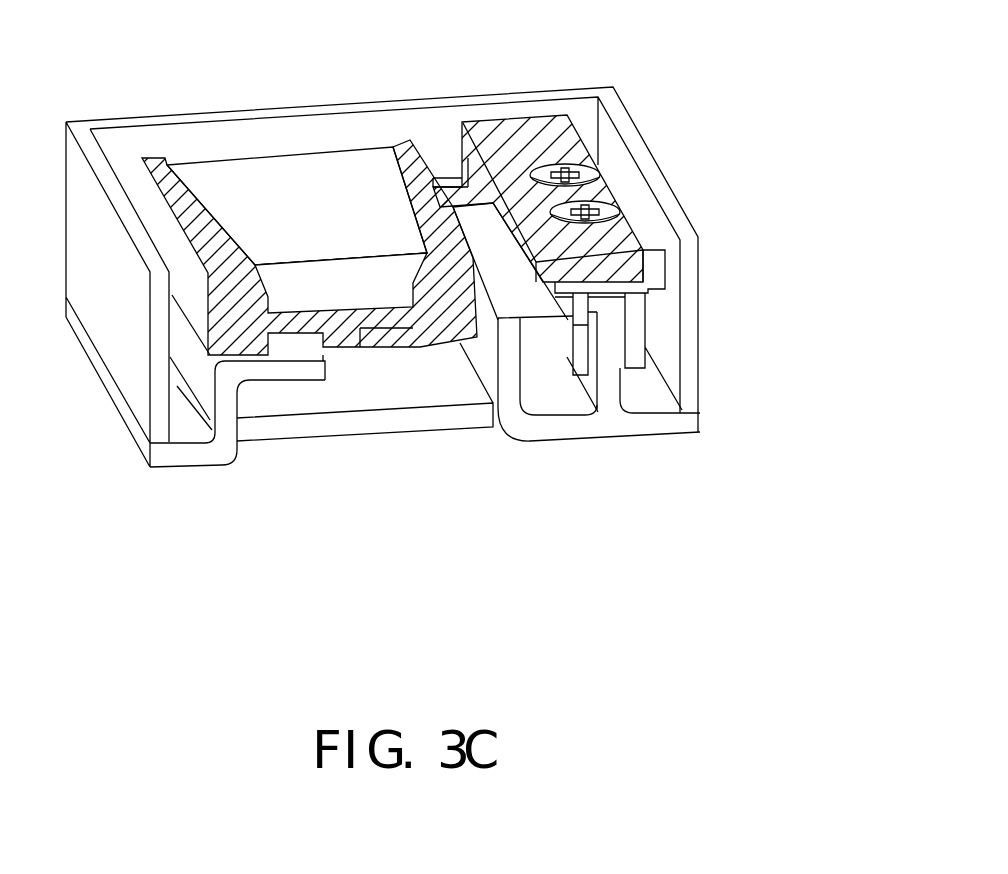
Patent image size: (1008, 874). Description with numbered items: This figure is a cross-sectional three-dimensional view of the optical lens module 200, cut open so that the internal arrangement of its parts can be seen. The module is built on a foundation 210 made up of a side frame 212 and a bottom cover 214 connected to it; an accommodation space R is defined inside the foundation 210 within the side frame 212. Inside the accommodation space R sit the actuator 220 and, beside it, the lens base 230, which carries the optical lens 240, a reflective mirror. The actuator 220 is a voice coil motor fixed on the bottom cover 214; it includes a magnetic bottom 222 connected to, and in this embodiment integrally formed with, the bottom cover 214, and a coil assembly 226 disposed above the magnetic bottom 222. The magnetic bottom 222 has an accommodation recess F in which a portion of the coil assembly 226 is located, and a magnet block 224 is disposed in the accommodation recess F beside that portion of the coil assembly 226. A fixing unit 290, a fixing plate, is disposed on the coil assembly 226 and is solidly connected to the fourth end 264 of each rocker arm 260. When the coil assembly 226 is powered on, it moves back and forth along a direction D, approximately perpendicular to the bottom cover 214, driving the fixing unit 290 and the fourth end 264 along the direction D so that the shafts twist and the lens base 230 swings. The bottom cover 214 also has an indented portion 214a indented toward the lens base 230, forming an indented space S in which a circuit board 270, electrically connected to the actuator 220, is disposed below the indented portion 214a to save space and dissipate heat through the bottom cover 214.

The optical lens module 200 is at (812, 642).
The foundation 210 is at (788, 462).
The side frame 212 is at (692, 403).
The bottom cover 214 is at (660, 425).
The indented portion 214a is at (283, 378).
The actuator 220 is at (813, 318).
The magnetic bottom 222 is at (607, 332).
The magnet block 224 is at (553, 348).
The coil assembly 226 is at (590, 298).
The lens base 230 is at (245, 312).
The optical lens 240 is at (234, 165).
The rocker arm 260 is at (450, 165).
The fourth end 264 is at (459, 166).
The circuit board 270 is at (347, 423).
The fixing unit 290 is at (630, 263).
The accommodation space R is at (134, 144).
The direction D is at (533, 124).
The indented space S is at (259, 408).
The accommodation recess F is at (550, 402).